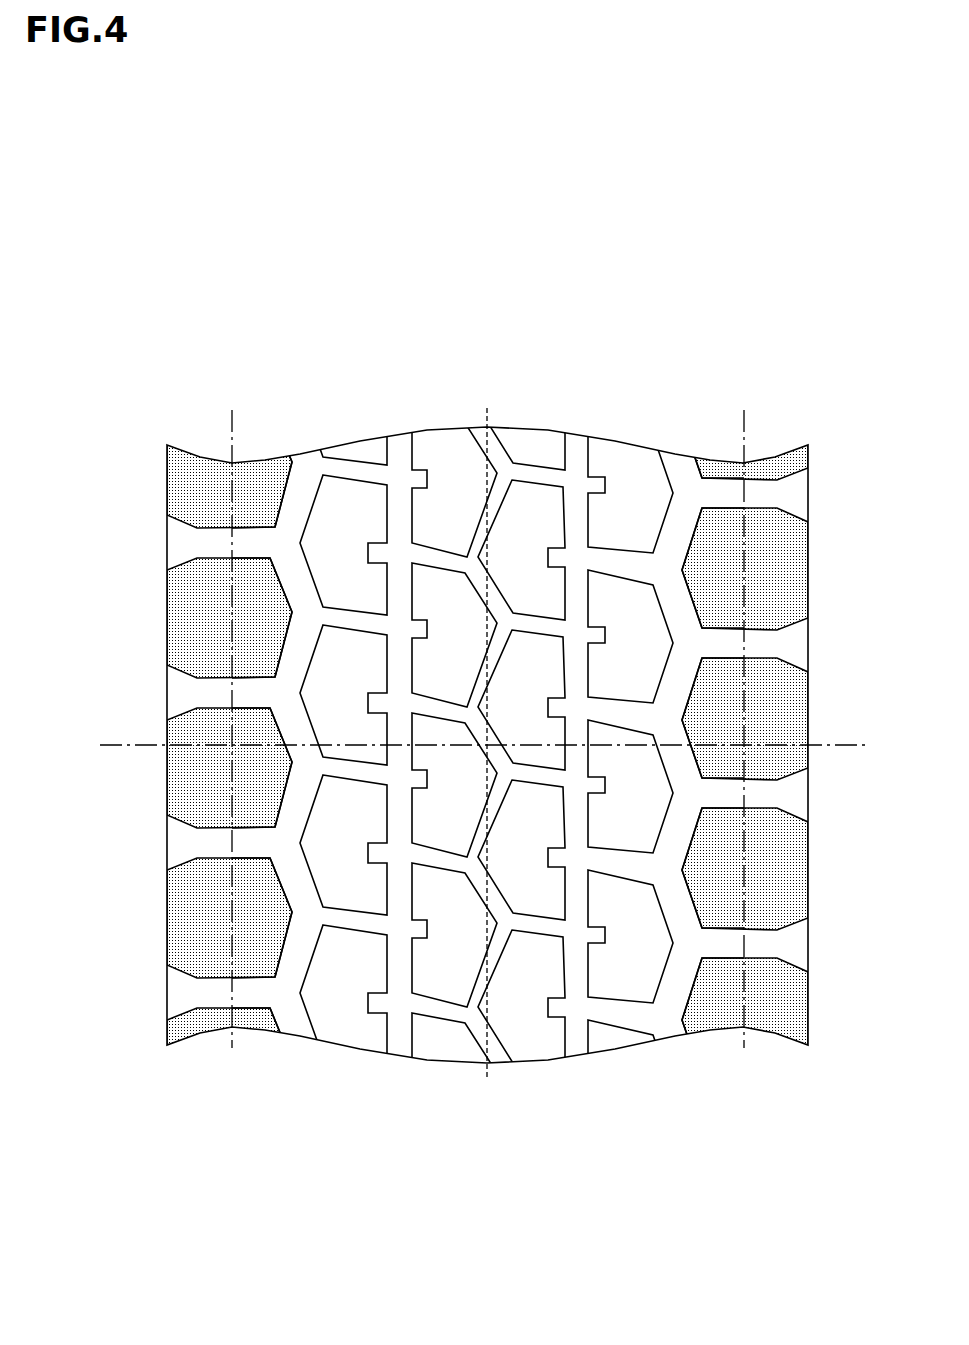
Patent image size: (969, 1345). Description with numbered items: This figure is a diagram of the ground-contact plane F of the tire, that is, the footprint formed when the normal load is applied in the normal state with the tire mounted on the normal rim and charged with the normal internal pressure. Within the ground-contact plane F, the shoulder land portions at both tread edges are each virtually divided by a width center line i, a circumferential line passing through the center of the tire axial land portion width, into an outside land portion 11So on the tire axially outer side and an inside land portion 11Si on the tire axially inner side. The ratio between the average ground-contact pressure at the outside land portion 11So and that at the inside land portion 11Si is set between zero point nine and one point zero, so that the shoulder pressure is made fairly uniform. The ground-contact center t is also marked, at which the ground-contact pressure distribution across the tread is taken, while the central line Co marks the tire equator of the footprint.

The outside land portion 11So is at (198, 940).
The inside land portion 11Si is at (265, 940).
The width center line i is at (748, 447).
The tire equator center line Co is at (485, 731).
The ground-contact plane F is at (625, 440).
The ground-contact center t is at (493, 748).